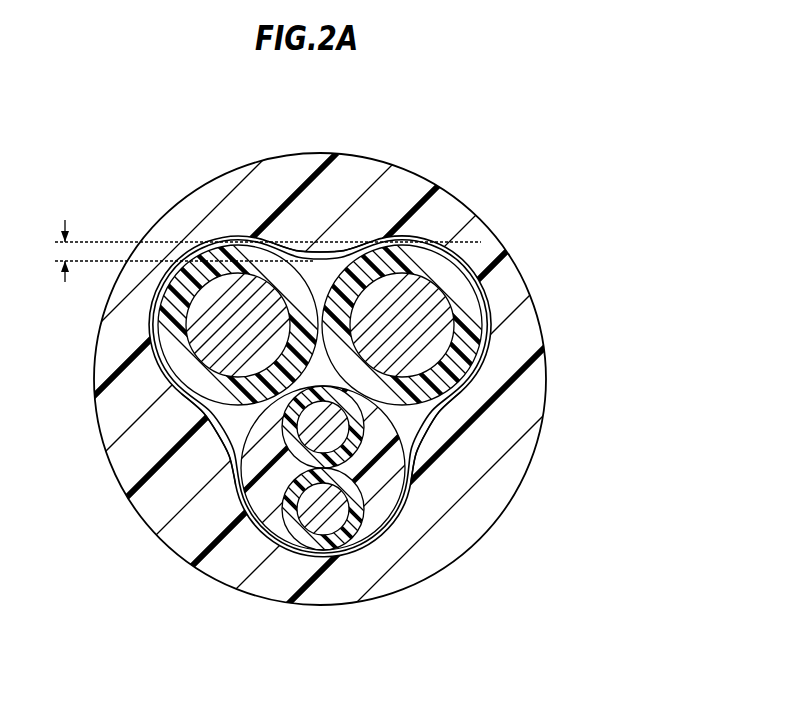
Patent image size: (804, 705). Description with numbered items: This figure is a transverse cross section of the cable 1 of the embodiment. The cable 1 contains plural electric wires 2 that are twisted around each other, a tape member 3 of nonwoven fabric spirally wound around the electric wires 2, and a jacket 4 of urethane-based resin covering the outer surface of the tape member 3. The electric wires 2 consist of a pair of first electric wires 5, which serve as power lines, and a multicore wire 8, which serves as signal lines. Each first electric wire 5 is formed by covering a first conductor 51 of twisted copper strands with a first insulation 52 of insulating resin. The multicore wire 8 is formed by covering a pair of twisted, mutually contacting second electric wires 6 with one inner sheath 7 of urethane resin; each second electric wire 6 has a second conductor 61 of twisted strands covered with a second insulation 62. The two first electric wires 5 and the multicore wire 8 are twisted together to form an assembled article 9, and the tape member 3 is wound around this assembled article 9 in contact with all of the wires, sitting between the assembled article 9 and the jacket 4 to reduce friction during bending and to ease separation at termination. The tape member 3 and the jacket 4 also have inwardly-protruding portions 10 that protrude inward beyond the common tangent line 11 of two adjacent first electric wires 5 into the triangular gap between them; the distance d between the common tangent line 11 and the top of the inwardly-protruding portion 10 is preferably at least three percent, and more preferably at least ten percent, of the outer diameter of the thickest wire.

The cable 1 is at (170, 157).
The electric wires 2 is at (480, 305).
The tape member 3 is at (481, 376).
The jacket 4 is at (528, 345).
The first electric wire 5 is at (155, 341).
The second electric wire 6 is at (284, 551).
The inner sheath 7 is at (380, 490).
The multicore wire 8 is at (370, 485).
The assembled article 9 is at (433, 437).
The inwardly-protruding portion 10 is at (316, 250).
The common tangent line 11 is at (116, 240).
The first conductor 51 is at (422, 293).
The first insulation 52 is at (470, 297).
The second conductor 61 is at (318, 527).
The second insulation 62 is at (333, 540).